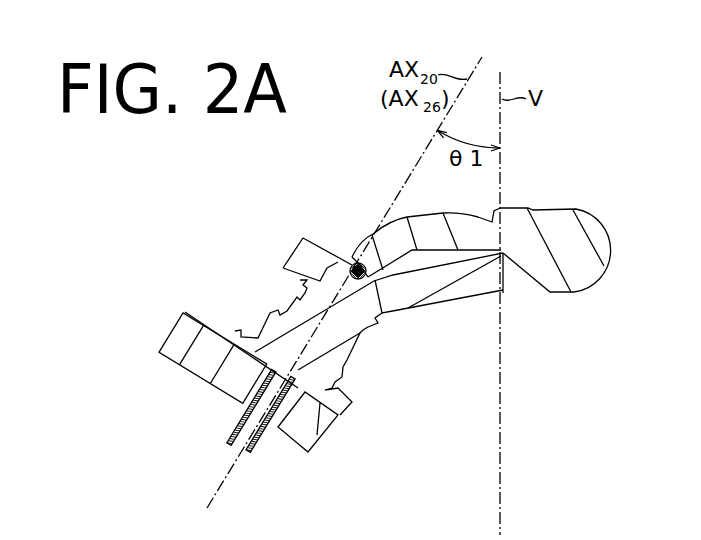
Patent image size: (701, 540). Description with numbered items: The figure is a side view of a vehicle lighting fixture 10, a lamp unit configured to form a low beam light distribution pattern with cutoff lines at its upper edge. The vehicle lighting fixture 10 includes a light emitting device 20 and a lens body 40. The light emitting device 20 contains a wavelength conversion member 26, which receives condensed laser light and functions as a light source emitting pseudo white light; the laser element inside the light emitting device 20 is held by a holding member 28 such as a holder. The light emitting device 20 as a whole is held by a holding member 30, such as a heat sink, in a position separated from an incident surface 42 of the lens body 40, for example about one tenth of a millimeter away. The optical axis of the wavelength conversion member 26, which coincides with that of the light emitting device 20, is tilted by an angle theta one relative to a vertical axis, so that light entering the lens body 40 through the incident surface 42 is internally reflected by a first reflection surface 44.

The vehicle lighting fixture 10 is at (350, 161).
The light emitting device 20 is at (262, 256).
The wavelength conversion member 26 is at (378, 313).
The holding member 28 is at (268, 331).
The holding member 30 is at (178, 322).
The lens body 40 is at (524, 181).
The incident surface 42 is at (348, 275).
The first reflection surface 44 is at (434, 214).